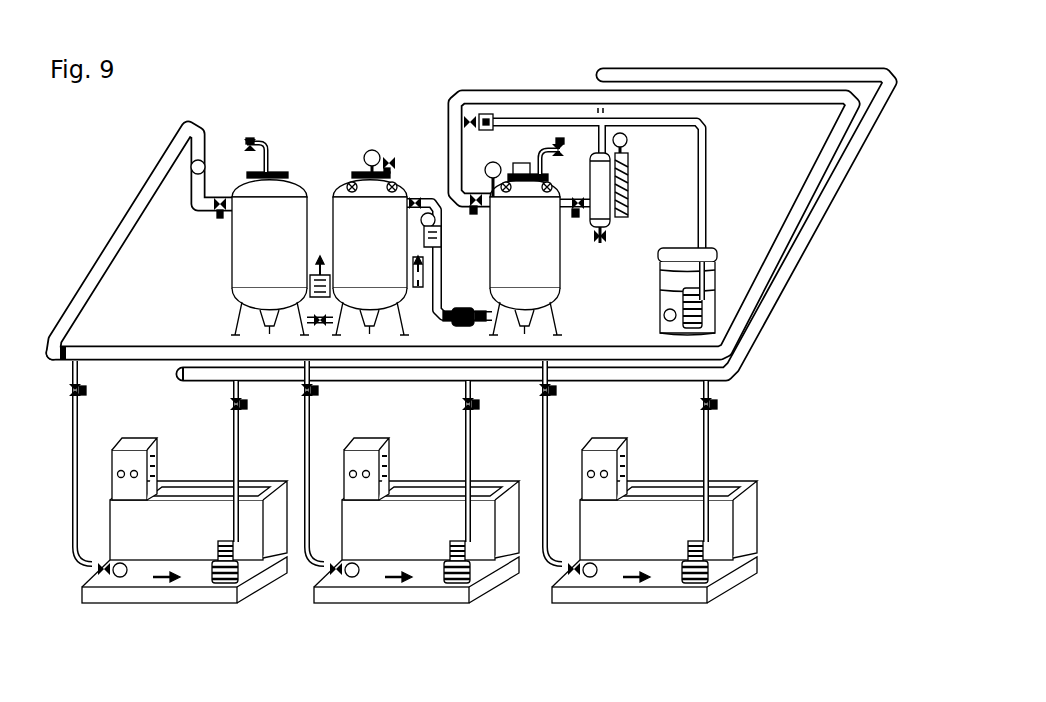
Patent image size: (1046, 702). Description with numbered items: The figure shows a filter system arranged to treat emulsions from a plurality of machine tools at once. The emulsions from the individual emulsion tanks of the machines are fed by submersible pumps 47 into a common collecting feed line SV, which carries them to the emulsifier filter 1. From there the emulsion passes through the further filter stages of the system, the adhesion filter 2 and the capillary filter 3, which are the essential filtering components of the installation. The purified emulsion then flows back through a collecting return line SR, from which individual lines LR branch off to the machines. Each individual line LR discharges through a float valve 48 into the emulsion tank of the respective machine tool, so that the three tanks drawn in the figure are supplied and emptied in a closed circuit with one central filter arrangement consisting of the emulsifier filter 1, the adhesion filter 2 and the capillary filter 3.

The emulsifier filter 1 is at (524, 236).
The adhesion filter 2 is at (370, 242).
The capillary filter 3 is at (270, 236).
The collecting feed line SV is at (110, 226).
The individual line LR is at (808, 179).
The collecting return line SR is at (781, 292).
The submersible pump 47 is at (732, 574).
The float valve 48 is at (82, 571).